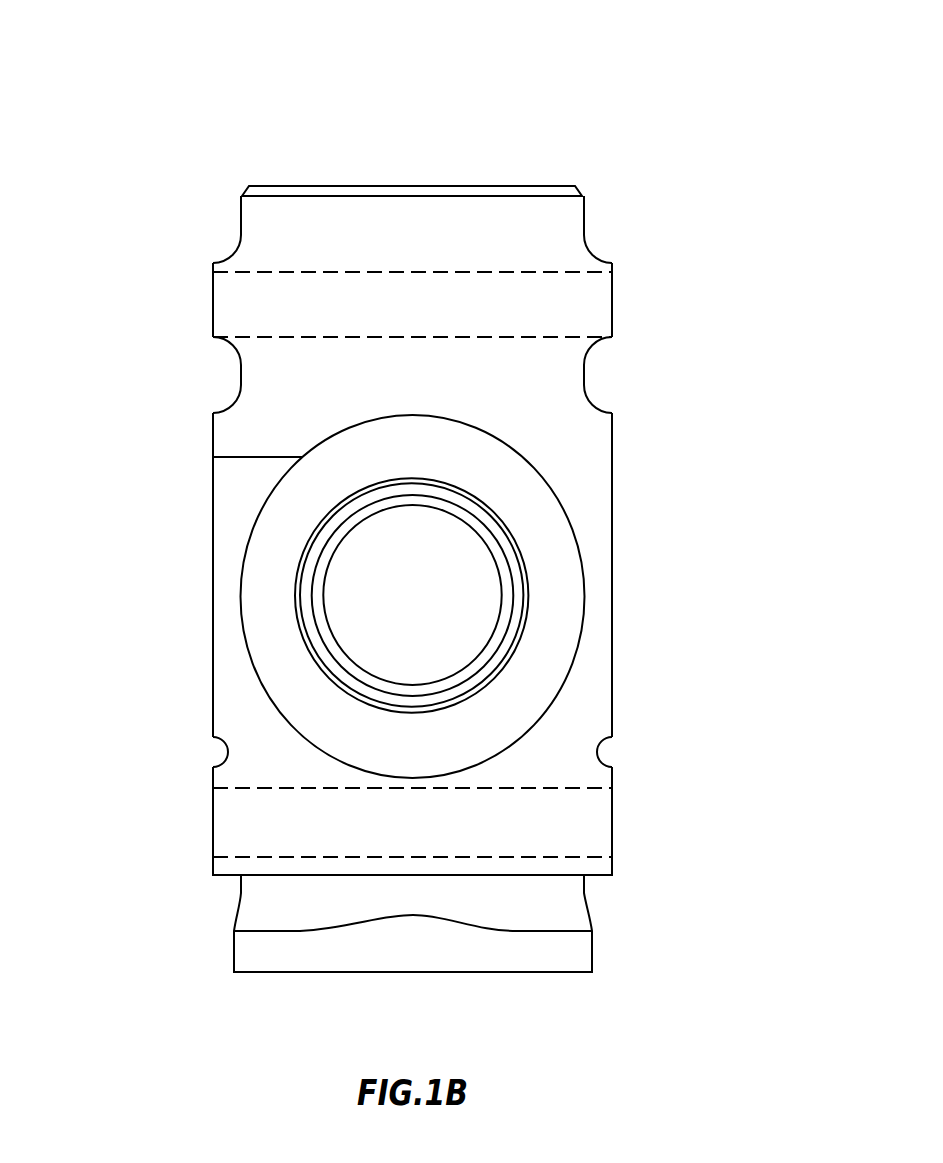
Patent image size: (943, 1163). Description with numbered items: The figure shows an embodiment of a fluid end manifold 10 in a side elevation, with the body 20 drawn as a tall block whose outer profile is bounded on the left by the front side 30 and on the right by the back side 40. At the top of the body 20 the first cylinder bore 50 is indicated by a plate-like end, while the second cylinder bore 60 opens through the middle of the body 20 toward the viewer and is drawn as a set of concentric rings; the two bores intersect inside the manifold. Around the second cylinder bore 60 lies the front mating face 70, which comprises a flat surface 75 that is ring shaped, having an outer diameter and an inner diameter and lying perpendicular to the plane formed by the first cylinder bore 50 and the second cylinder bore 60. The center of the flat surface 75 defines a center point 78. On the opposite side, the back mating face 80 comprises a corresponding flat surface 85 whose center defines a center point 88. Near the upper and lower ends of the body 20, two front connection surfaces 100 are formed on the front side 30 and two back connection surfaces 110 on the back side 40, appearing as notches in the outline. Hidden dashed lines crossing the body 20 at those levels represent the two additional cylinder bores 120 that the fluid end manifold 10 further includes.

The fluid end manifold 10 is at (215, 100).
The body 20 is at (453, 243).
The front side 30 is at (213, 438).
The back side 40 is at (613, 435).
The first cylinder bore 50 is at (482, 186).
The second cylinder bore 60 is at (490, 608).
The front mating face 70 is at (200, 474).
The flat surface 75 is at (200, 505).
The center point 78 is at (200, 619).
The back mating face 80 is at (625, 476).
The flat surface 85 is at (625, 510).
The center point 88 is at (625, 590).
The front connection surface 100 is at (227, 262).
The back connection surface 110 is at (603, 262).
The additional cylinder bore 120 is at (200, 299).